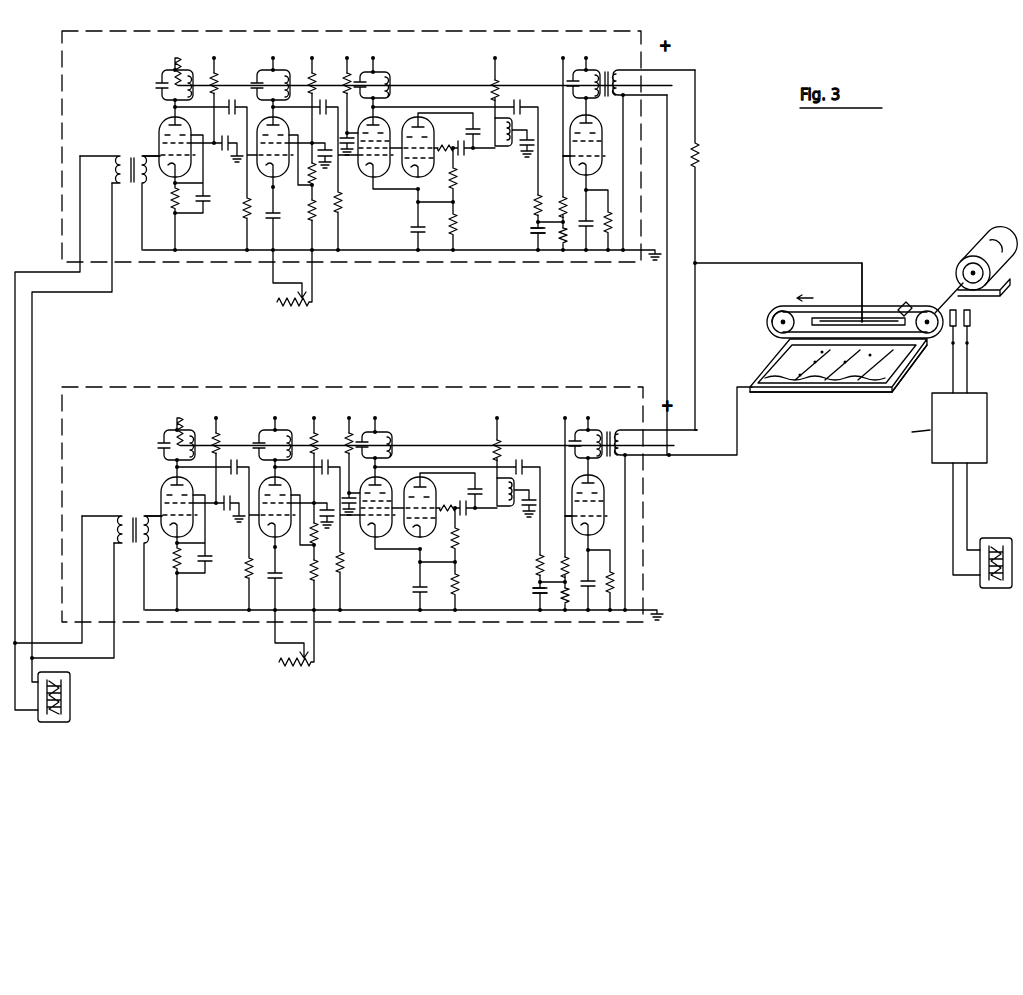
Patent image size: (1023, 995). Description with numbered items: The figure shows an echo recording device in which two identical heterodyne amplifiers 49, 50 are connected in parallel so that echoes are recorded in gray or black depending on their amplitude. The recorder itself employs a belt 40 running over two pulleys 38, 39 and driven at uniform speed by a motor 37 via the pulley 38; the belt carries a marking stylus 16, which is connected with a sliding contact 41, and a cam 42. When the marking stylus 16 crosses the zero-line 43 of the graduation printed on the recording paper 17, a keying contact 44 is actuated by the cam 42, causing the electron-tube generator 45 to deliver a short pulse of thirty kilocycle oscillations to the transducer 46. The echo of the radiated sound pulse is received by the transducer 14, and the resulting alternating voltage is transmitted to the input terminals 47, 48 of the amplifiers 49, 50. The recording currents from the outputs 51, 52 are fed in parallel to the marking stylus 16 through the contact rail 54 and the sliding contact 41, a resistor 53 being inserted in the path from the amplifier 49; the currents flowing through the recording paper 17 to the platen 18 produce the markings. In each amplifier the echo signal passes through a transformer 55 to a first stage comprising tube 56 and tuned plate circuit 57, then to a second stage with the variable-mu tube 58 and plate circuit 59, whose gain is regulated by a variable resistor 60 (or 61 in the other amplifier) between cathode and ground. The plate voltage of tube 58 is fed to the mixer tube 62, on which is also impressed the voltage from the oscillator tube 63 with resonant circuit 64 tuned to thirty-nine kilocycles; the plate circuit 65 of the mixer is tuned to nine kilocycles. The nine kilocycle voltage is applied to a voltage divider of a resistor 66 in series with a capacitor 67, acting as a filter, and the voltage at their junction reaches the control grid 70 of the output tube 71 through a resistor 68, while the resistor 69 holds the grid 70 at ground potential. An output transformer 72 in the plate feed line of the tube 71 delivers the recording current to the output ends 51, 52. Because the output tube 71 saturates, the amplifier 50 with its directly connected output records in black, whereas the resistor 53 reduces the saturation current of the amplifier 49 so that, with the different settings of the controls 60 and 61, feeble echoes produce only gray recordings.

The transducer 14 is at (70, 712).
The marking stylus 16 is at (826, 336).
The recording paper 17 is at (907, 374).
The platen 18 is at (797, 388).
The motor 37 is at (970, 258).
The pulley 38 is at (927, 317).
The pulley 39 is at (783, 307).
The belt 40 is at (845, 305).
The sliding contact 41 is at (828, 322).
The cam 42 is at (902, 303).
The zero-line 43 is at (774, 368).
The keying contact 44 is at (976, 333).
The electron-tube generator 45 is at (934, 455).
The transducer 46 is at (983, 591).
The input terminal 47 is at (108, 278).
The input terminal 48 is at (113, 642).
The amplifier 49 is at (558, 31).
The amplifier 50 is at (514, 386).
The output 51 is at (654, 88).
The output 52 is at (657, 449).
The resistor 53 is at (704, 154).
The contact rail 54 is at (870, 320).
The transformer 55 is at (123, 153).
The tube 56 is at (160, 140).
The tuned plate circuit 57 is at (162, 88).
The variable-mu tube 58 is at (258, 166).
The plate circuit 59 is at (284, 81).
The variable resistor 60 is at (295, 306).
The variable resistor 61 is at (302, 666).
The mixer tube 62 is at (372, 176).
The oscillator tube 63 is at (422, 172).
The resonant circuit 64 is at (491, 147).
The plate circuit 65 is at (390, 77).
The resistor 66 is at (535, 203).
The capacitor 67 is at (535, 233).
The resistor 68 is at (565, 198).
The resistor 69 is at (568, 244).
The control grid 70 is at (568, 149).
The output tube 71 is at (597, 139).
The output transformer 72 is at (605, 67).